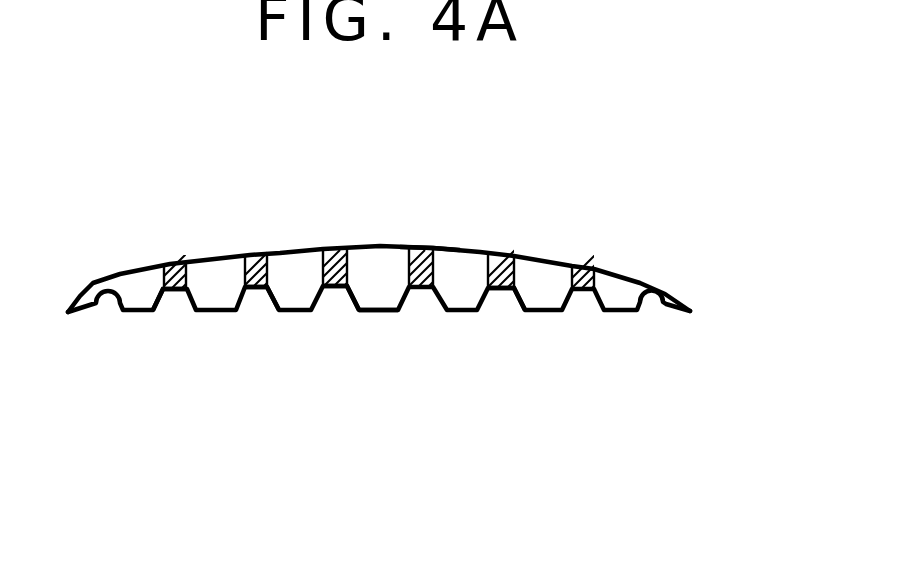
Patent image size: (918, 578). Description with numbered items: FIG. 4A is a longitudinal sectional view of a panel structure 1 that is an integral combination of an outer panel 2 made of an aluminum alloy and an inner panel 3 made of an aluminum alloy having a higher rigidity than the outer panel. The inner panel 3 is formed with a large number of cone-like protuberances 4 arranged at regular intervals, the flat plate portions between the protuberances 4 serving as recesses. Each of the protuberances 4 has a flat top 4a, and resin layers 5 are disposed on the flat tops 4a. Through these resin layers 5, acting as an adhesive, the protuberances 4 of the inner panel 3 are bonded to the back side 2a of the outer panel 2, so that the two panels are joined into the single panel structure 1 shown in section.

The panel structure 1 is at (523, 236).
The outer panel 2 is at (369, 244).
The back side 2a is at (417, 248).
The inner panel 3 is at (381, 316).
The protuberances 4 is at (258, 296).
The flat tops 4a is at (178, 293).
The resin layers 5 is at (340, 249).